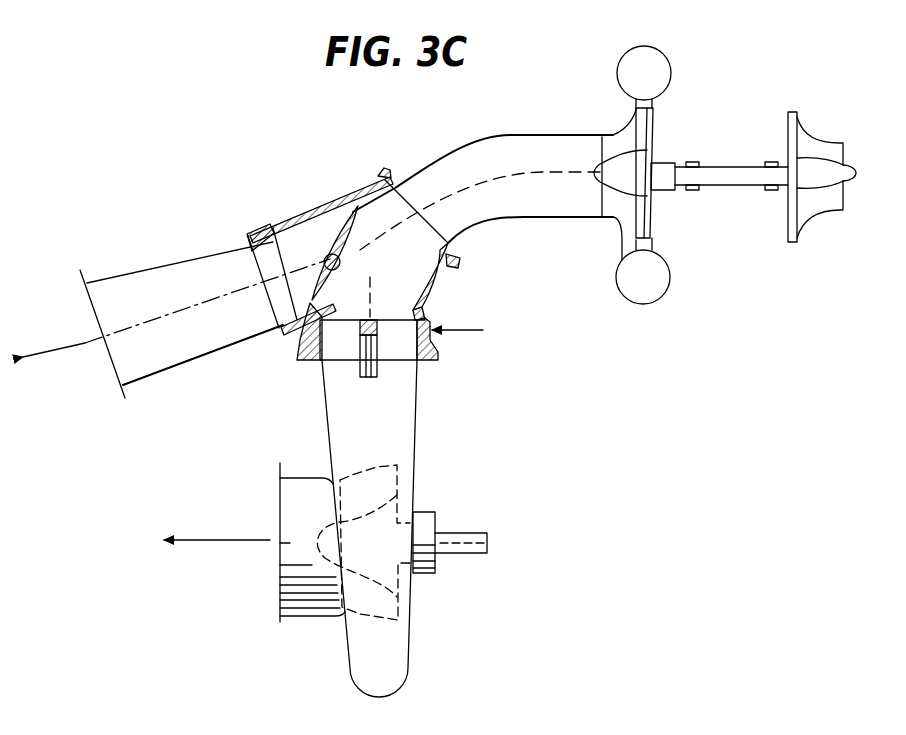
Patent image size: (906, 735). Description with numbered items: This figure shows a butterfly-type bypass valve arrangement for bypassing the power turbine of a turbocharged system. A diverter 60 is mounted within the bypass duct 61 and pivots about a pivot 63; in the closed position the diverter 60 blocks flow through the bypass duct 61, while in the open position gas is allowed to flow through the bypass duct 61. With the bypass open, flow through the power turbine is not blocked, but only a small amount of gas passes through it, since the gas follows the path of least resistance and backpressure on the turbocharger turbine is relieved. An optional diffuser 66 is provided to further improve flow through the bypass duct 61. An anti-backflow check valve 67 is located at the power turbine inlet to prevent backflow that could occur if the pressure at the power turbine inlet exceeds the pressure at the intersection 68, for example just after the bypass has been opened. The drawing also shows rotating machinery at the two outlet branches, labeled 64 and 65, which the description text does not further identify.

The diverter 60 is at (323, 254).
The bypass duct 61 is at (268, 232).
The pivot 63 is at (286, 248).
The axial pump 64 is at (452, 593).
The turbine pump 65 is at (727, 122).
The diffuser 66 is at (172, 345).
The anti-backflow check valve 67 is at (403, 360).
The intersection 68 is at (388, 263).